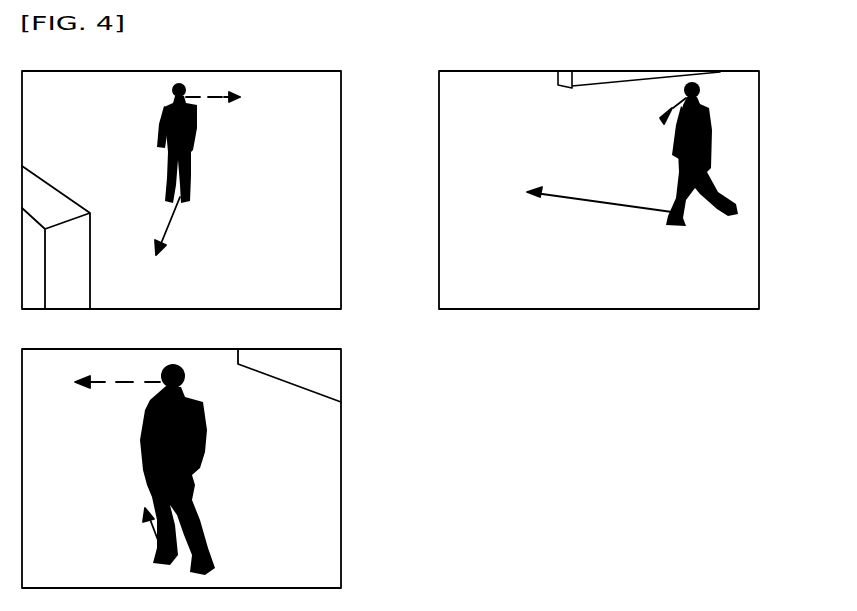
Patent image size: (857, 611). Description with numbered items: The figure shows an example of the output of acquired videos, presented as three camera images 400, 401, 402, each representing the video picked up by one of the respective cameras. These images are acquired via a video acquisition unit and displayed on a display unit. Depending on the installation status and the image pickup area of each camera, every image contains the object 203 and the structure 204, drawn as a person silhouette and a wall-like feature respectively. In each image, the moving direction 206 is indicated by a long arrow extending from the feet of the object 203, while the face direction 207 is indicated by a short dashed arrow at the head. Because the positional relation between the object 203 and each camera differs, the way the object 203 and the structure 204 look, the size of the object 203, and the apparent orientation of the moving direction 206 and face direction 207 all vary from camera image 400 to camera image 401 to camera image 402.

The object 203 is at (186, 177).
The structure 204 is at (90, 272).
The moving direction 206 is at (167, 232).
The face direction 207 is at (218, 100).
The camera image 400 is at (341, 262).
The camera image 401 is at (759, 228).
The camera image 402 is at (341, 520).